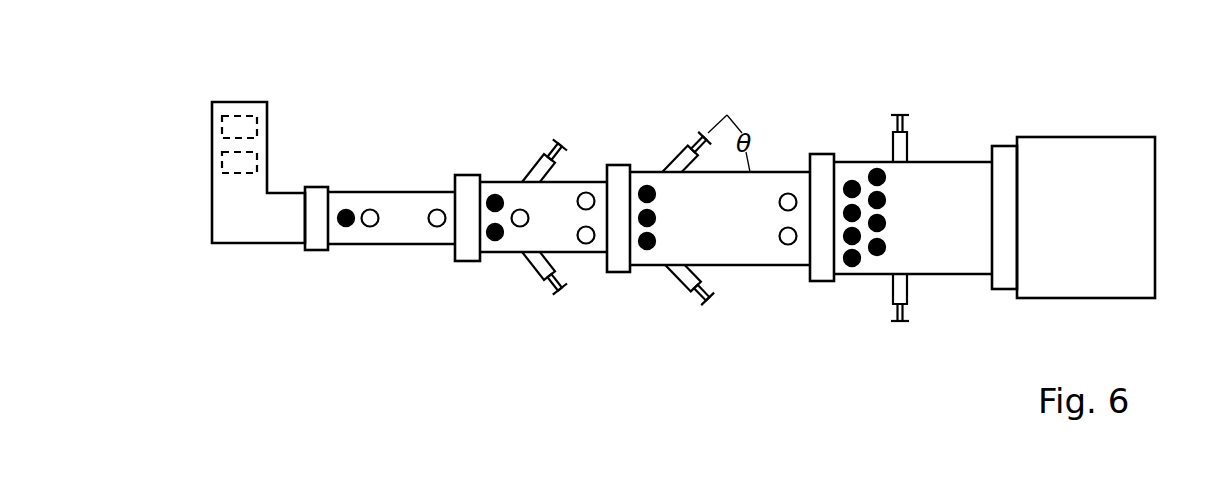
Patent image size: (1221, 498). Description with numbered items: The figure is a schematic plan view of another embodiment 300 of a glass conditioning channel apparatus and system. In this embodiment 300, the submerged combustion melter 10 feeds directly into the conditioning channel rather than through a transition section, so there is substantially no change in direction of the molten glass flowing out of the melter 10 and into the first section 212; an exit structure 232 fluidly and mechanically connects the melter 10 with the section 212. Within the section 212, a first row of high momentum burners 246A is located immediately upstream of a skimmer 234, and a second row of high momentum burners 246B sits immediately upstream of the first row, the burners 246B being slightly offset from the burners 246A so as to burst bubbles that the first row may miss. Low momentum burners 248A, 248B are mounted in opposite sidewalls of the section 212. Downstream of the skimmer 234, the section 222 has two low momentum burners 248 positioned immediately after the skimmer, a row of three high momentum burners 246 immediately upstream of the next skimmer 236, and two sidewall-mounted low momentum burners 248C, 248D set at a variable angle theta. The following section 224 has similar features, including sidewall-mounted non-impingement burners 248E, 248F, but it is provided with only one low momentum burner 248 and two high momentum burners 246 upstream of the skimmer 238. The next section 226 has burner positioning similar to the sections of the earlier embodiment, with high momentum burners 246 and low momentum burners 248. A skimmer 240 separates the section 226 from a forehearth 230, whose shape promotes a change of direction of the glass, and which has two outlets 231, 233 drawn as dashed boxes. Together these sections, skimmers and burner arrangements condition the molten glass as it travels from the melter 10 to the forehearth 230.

The SC melter 10 is at (1105, 230).
The section 212 is at (964, 230).
The section 222 is at (740, 230).
The section 224 is at (503, 253).
The section 226 is at (363, 245).
The forehearth 230 is at (212, 218).
The outlet 231 is at (222, 157).
The outlet 233 is at (222, 118).
The exit structure 232 is at (1005, 146).
The skimmer 234 is at (822, 154).
The skimmer 236 is at (617, 273).
The skimmer 238 is at (468, 262).
The skimmer 240 is at (313, 251).
The high momentum burner 246 is at (346, 209).
The high momentum burner 246A is at (852, 267).
The high momentum burner 246B is at (877, 256).
The low momentum burner 248 is at (437, 209).
The low momentum burner 248A is at (908, 140).
The low momentum burner 248B is at (908, 295).
The low momentum burner 248C is at (664, 166).
The low momentum burner 248D is at (673, 284).
The non-impingement burner 248E is at (532, 166).
The non-impingement burner 248F is at (534, 270).
The embodiment 300 is at (1130, 60).